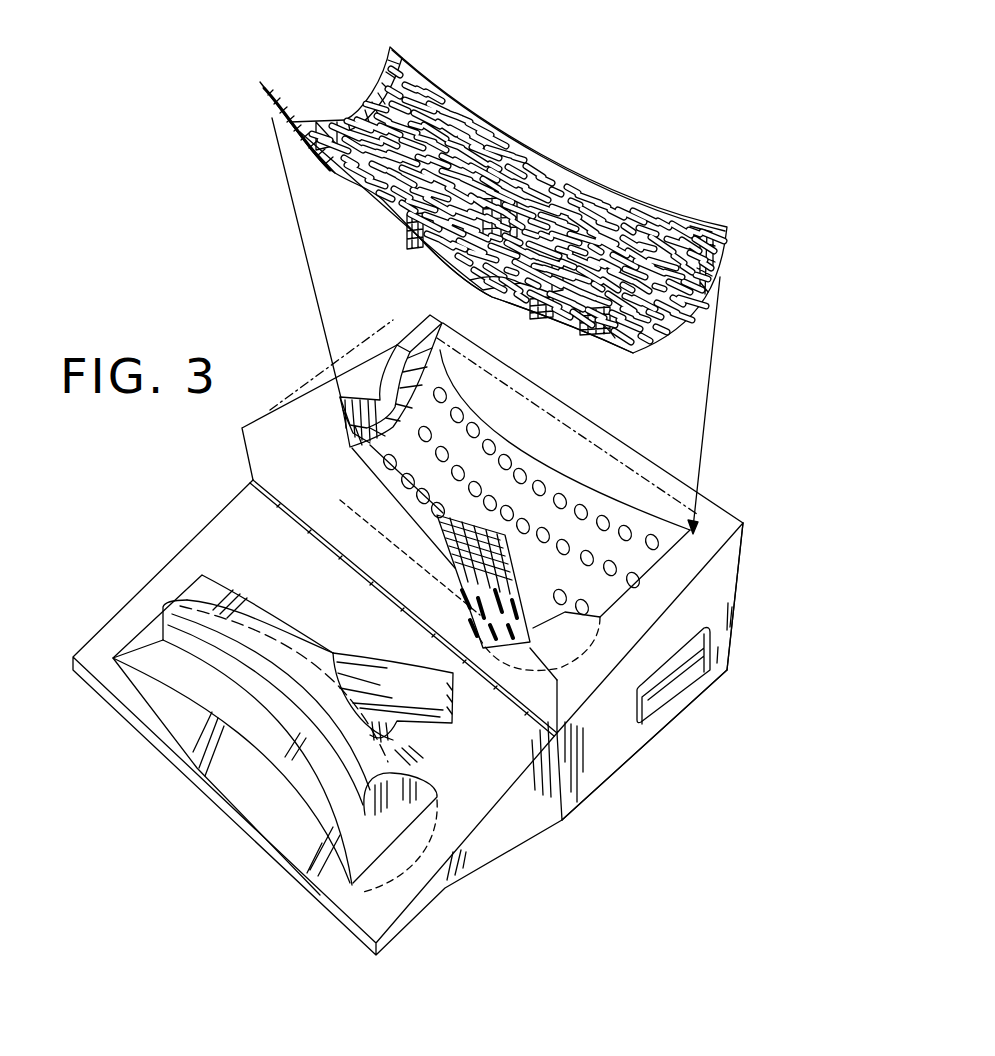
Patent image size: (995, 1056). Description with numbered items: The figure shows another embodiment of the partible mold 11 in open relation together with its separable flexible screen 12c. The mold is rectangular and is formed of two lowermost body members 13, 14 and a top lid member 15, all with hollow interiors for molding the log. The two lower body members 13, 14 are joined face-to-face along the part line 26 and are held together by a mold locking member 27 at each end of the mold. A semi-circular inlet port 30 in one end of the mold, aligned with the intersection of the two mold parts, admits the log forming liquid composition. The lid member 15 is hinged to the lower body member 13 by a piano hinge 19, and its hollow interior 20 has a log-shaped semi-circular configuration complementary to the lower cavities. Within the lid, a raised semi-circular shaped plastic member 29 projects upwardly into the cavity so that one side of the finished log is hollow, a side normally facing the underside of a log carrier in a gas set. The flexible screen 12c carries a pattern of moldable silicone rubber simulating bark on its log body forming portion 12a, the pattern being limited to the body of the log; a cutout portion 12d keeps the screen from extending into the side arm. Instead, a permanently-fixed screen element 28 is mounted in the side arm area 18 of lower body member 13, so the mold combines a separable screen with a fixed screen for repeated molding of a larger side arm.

The partible mold 11 is at (732, 487).
The log body forming portion 12a is at (470, 120).
The flexible screen 12c is at (580, 169).
The cutout portion 12d is at (440, 262).
The lowermost body member 13 is at (600, 767).
The lowermost body member 14 is at (730, 584).
The lid member 15 is at (478, 848).
The extended hollow interior surface 18 is at (524, 618).
The piano hinge 19 is at (340, 553).
The hollow interior of the lid member 20 is at (313, 780).
The part line 26 is at (390, 440).
The mold locking member 27 is at (687, 673).
The permanently-fixed screen element 28 is at (465, 553).
The raised semi-circular shaped plastic member 29 is at (287, 697).
The semi-circular inlet port 30 is at (356, 365).